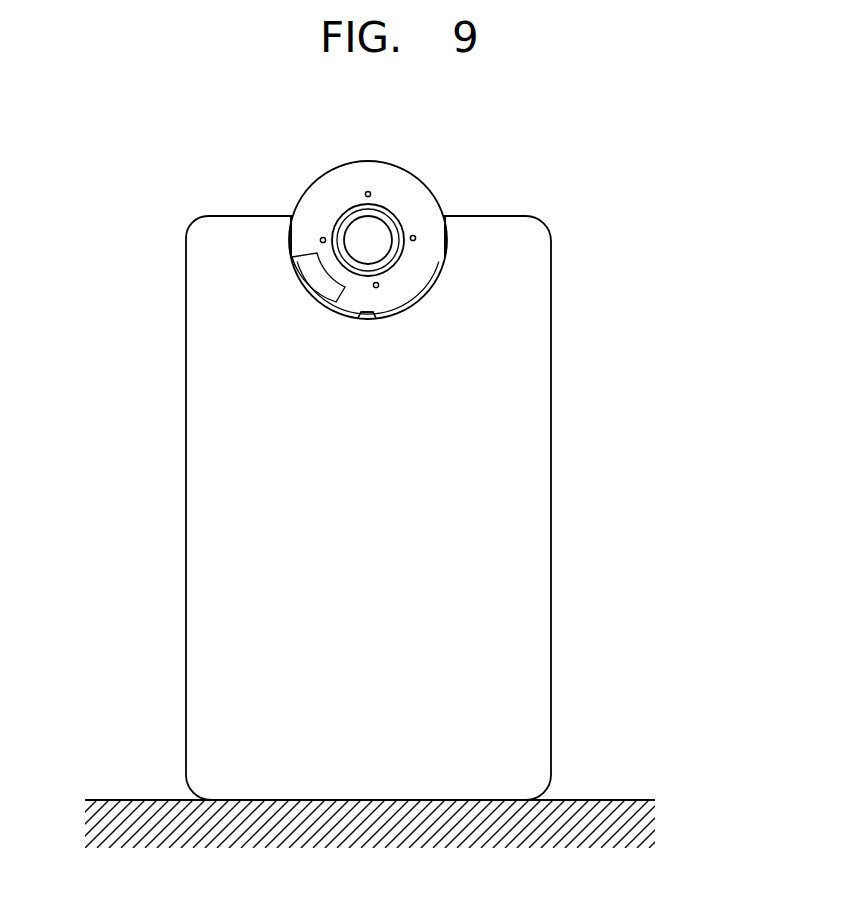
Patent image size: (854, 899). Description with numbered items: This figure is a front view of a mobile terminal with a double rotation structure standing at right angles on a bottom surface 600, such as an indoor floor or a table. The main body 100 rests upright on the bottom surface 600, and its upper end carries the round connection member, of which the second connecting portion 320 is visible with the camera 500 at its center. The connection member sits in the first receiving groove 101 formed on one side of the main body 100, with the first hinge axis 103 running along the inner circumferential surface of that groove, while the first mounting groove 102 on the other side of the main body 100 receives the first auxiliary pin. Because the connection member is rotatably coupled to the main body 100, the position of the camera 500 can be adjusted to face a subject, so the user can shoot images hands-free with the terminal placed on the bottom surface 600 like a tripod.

The main body 100 is at (177, 505).
The first receiving groove 101 is at (376, 321).
The first mounting groove 102 is at (293, 212).
The first hinge axis 103 is at (442, 212).
The second connecting portion 320 is at (332, 185).
The camera 500 is at (377, 223).
The bottom surface 600 is at (607, 810).